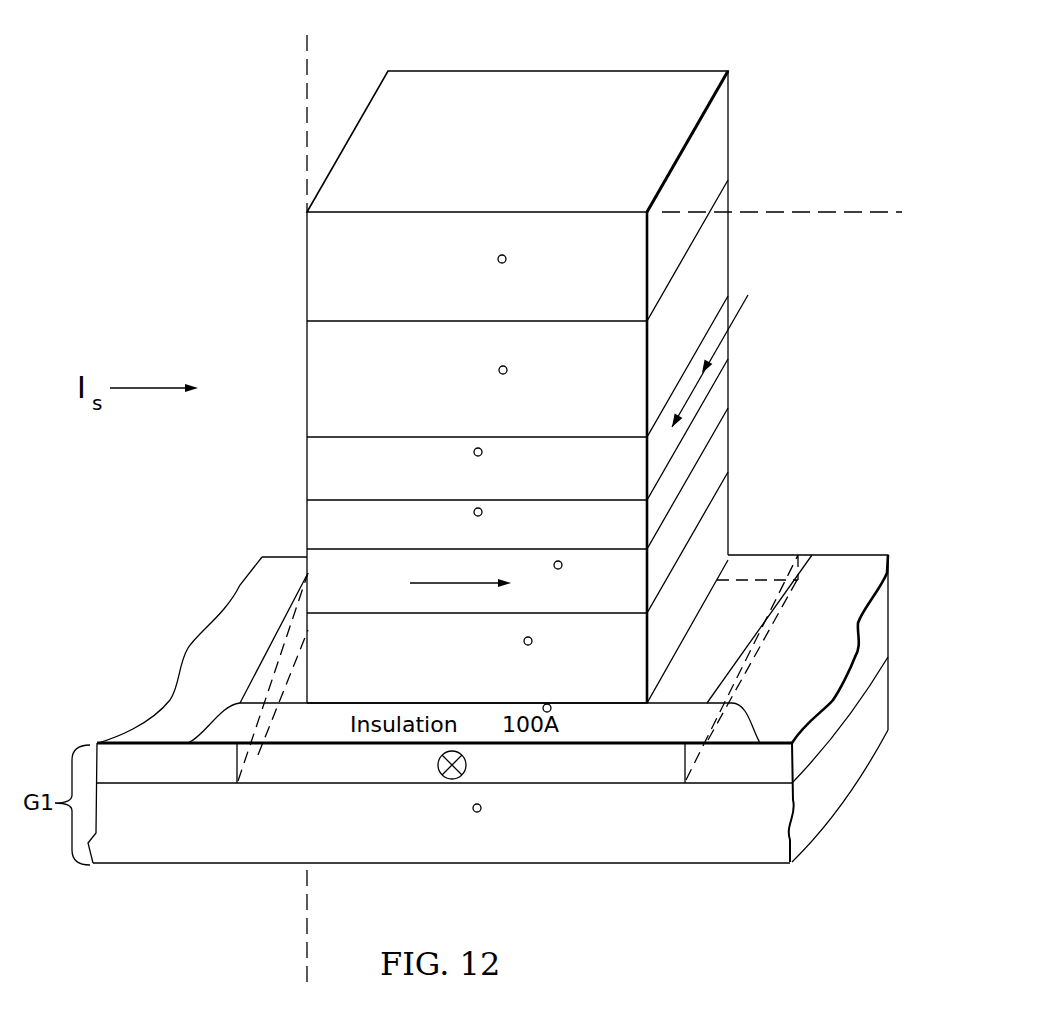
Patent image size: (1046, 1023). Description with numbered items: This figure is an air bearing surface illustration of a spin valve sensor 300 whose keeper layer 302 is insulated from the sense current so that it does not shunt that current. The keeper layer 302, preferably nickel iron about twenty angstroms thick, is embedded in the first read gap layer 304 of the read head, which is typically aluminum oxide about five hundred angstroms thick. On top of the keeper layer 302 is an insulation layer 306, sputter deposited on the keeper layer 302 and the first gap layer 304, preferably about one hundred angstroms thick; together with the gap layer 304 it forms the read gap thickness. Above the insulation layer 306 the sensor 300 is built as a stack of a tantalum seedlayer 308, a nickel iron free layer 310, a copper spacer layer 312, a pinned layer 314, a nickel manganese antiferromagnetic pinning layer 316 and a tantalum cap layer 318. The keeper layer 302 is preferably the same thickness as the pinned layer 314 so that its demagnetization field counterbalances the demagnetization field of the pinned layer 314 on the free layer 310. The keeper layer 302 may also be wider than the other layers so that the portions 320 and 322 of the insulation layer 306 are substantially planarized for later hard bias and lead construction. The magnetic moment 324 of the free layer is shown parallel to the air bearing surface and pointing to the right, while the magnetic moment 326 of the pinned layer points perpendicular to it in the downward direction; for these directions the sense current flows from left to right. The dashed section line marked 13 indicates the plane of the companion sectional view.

The section line of FIG. 13 is at (291, 93).
The spin valve sensor 300 is at (748, 70).
The keeper layer 302 is at (295, 767).
The first read gap layer 304 is at (622, 830).
The insulation layer 306 is at (172, 762).
The seedlayer 308 is at (717, 525).
The free layer 310 is at (705, 473).
The spacer layer 312 is at (712, 407).
The pinned layer 314 is at (722, 343).
The antiferromagnetic pinning layer 316 is at (702, 280).
The cap layer 318 is at (715, 147).
The portion of the insulation layer 320 is at (280, 645).
The portion of the insulation layer 322 is at (750, 585).
The magnetic moment of the free layer 324 is at (438, 581).
The magnetic moment of the pinned layer 326 is at (736, 348).